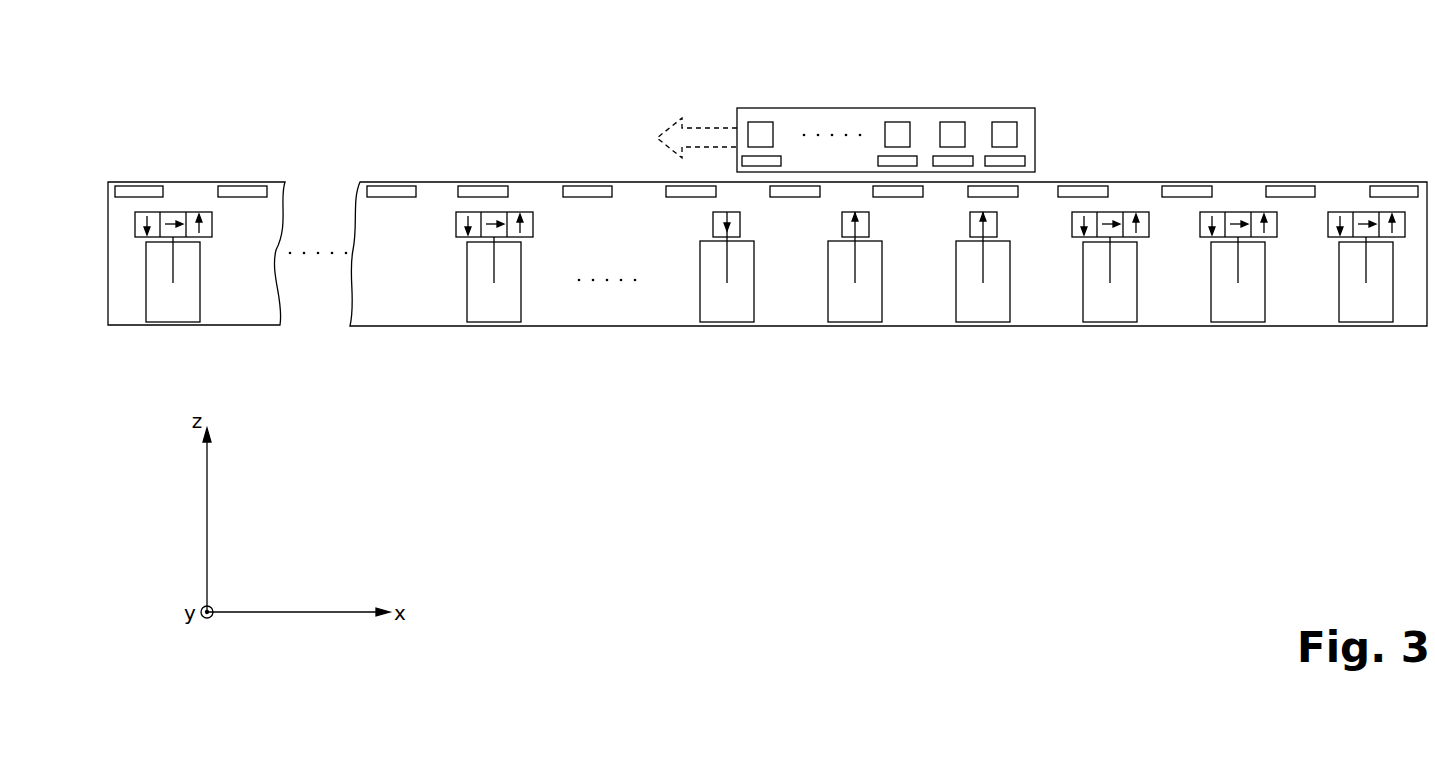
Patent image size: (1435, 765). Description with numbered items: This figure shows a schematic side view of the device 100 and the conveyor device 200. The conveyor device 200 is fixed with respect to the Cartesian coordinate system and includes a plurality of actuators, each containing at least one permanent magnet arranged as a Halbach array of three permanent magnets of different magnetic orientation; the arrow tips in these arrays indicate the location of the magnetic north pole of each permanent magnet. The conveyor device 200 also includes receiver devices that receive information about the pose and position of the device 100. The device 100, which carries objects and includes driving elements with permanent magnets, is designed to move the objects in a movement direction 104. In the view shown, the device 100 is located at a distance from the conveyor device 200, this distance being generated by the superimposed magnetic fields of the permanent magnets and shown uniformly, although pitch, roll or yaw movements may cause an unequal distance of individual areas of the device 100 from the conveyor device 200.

The device 100 is at (833, 108).
The movement direction 104 is at (703, 128).
The conveyor device 200 is at (400, 327).